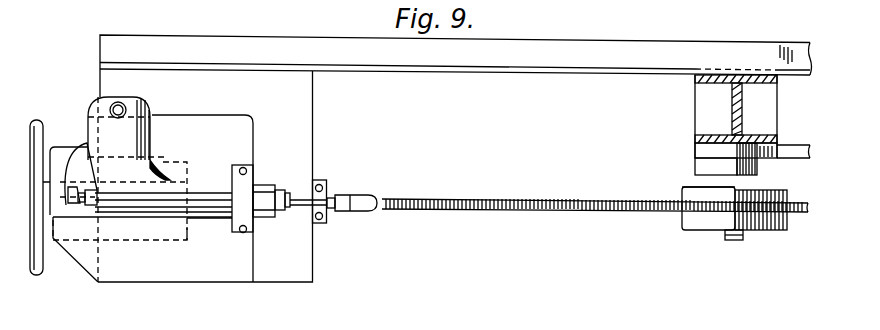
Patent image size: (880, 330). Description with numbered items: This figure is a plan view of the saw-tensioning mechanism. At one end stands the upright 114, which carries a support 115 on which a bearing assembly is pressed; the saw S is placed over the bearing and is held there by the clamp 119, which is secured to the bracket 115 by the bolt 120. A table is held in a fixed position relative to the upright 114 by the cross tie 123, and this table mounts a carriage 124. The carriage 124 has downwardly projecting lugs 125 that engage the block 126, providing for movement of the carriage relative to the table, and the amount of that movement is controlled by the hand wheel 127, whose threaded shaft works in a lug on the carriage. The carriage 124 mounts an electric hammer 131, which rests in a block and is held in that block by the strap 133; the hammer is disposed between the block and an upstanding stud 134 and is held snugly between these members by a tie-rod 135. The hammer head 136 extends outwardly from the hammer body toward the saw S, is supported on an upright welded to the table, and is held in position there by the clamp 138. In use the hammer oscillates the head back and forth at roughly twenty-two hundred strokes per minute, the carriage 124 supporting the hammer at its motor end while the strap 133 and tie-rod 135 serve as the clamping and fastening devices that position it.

The upright 114 is at (700, 108).
The support 115 is at (683, 188).
The clamp 119 is at (700, 222).
The bolt 120 is at (740, 240).
The cross tie 123 is at (460, 73).
The carriage 124 is at (237, 120).
The downwardly projecting lugs 125 is at (163, 162).
The block 126 is at (203, 230).
The hand wheel 127 is at (35, 278).
The electric hammer 131 is at (200, 192).
The strap 133 is at (247, 192).
The upstanding stud 134 is at (88, 196).
The tie-rod 135 is at (173, 200).
The hammer head 136 is at (350, 195).
The clamp 138 is at (320, 178).
The saw S is at (500, 199).